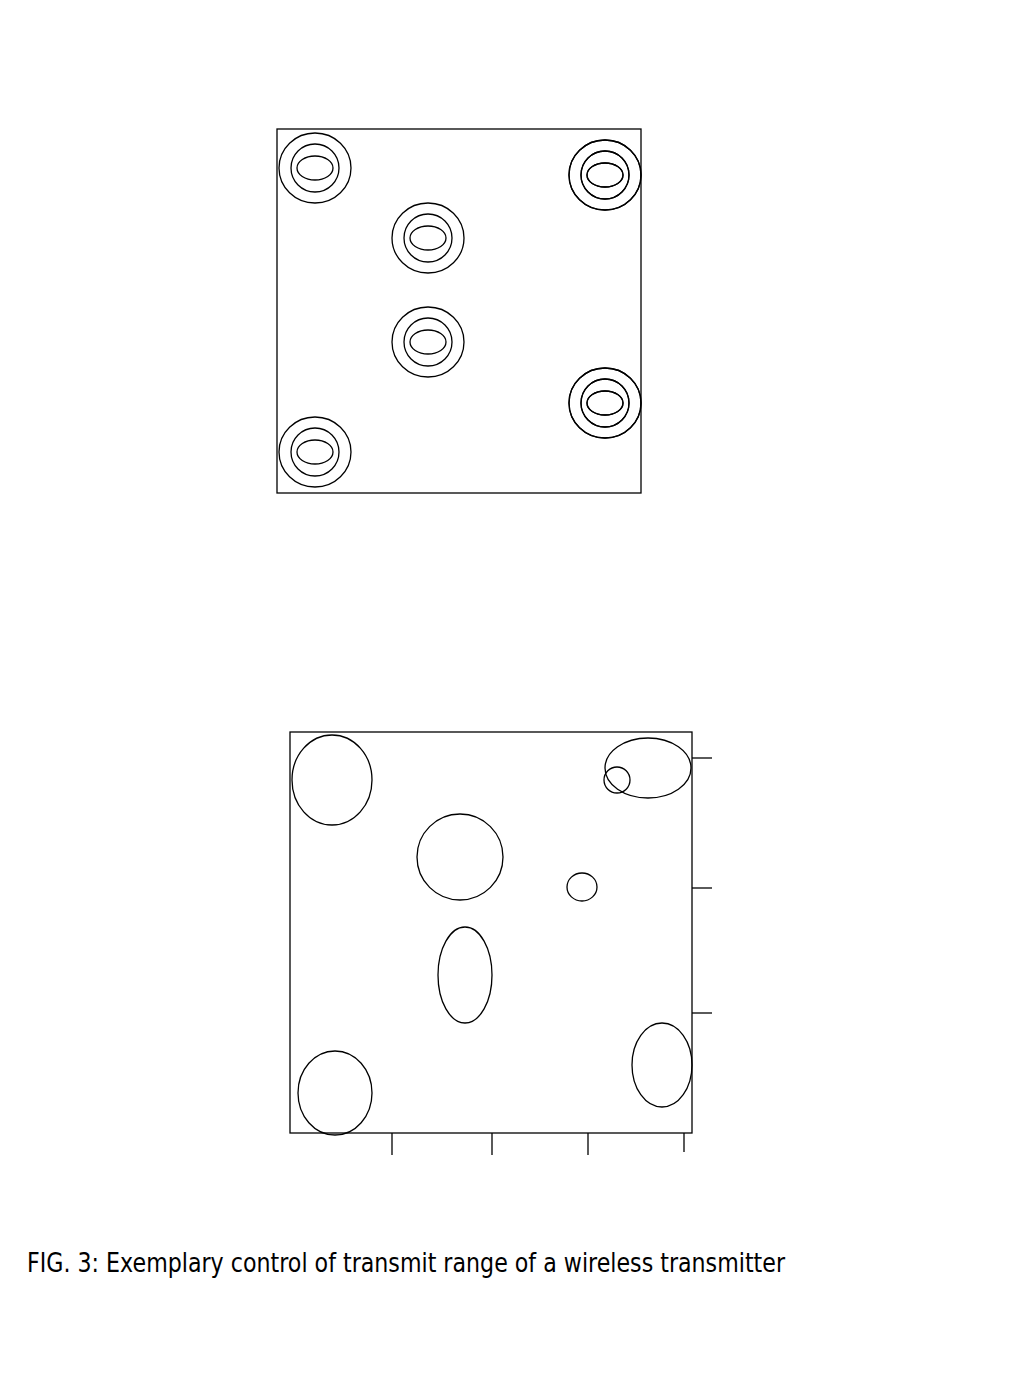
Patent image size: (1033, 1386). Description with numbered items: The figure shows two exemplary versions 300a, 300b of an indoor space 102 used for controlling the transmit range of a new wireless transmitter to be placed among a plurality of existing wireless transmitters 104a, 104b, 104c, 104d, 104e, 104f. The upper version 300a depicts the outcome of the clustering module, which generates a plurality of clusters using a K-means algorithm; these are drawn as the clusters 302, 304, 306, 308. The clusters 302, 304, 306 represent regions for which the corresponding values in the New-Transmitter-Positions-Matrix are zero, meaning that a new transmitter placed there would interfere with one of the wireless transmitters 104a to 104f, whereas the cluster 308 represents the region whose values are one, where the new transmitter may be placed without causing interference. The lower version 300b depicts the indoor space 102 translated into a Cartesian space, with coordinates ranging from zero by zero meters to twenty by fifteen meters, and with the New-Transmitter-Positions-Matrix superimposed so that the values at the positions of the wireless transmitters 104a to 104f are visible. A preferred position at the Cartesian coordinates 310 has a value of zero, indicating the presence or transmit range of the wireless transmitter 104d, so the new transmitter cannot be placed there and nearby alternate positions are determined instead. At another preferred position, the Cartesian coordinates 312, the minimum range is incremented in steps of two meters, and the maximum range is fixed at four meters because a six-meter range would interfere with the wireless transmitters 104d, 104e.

The exemplary version of the indoor space 300a is at (724, 62).
The exemplary version of the indoor space 300b is at (777, 654).
The indoor space 102 is at (457, 129).
The wireless transmitter 104a is at (310, 160).
The wireless transmitter 104b is at (310, 452).
The wireless transmitter 104c is at (605, 407).
The wireless transmitter 104d is at (610, 173).
The wireless transmitter 104e is at (427, 237).
The wireless transmitter 104f is at (428, 342).
The cluster 302 is at (632, 148).
The cluster 304 is at (627, 175).
The cluster 306 is at (607, 187).
The cluster 308 is at (597, 292).
The Cartesian coordinates 310 is at (617, 778).
The Cartesian coordinates 312 is at (580, 885).